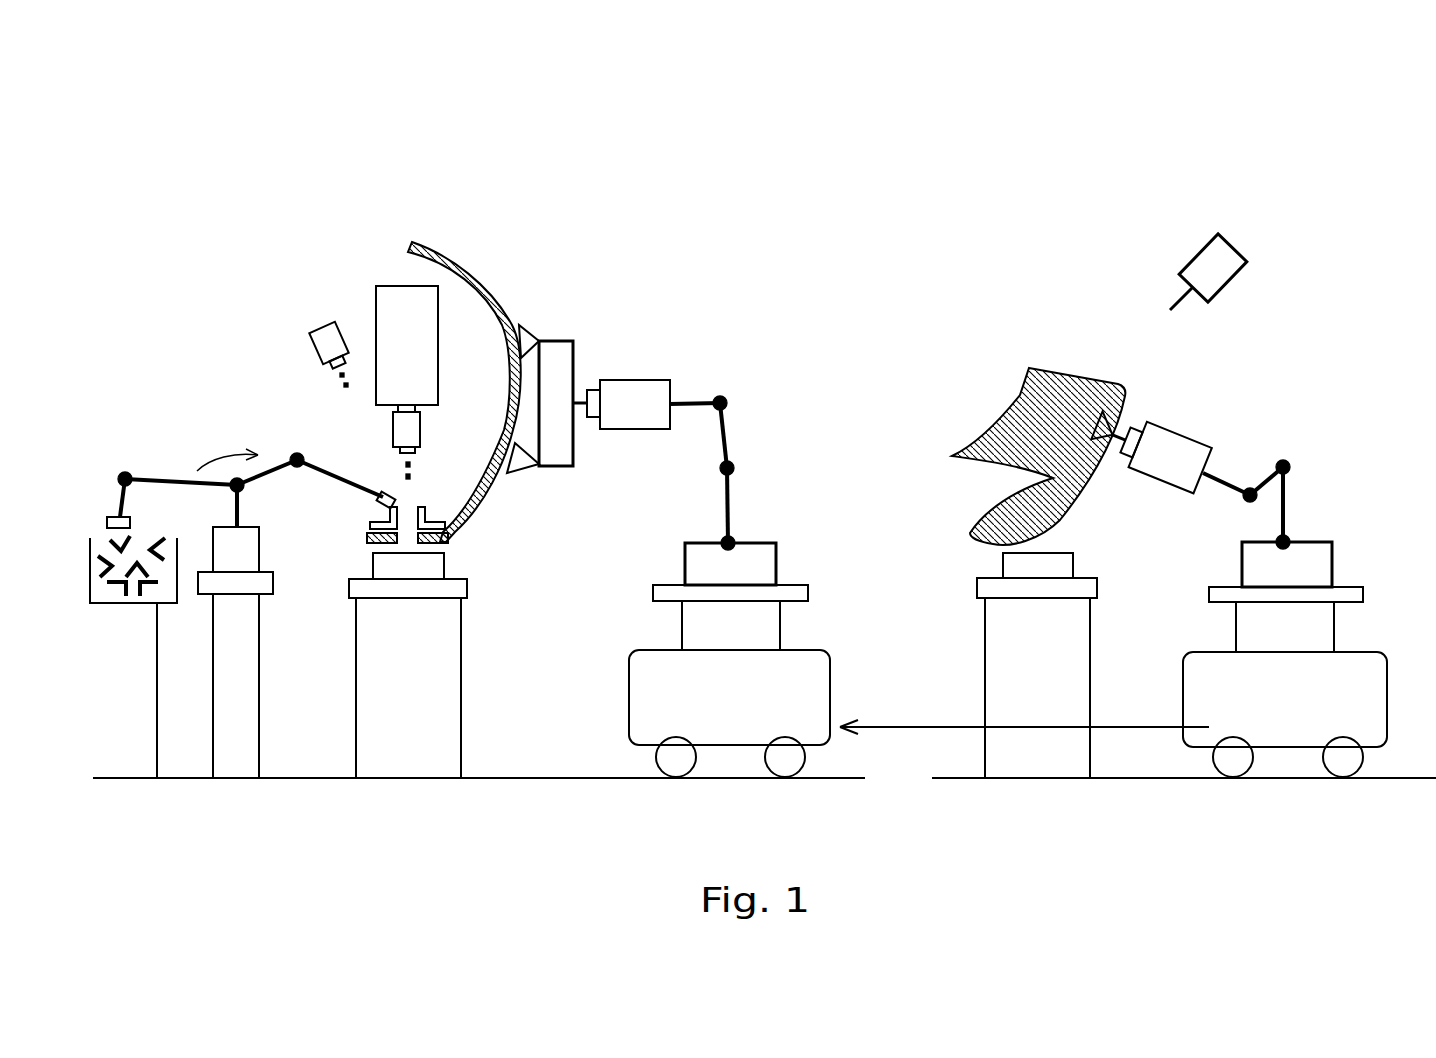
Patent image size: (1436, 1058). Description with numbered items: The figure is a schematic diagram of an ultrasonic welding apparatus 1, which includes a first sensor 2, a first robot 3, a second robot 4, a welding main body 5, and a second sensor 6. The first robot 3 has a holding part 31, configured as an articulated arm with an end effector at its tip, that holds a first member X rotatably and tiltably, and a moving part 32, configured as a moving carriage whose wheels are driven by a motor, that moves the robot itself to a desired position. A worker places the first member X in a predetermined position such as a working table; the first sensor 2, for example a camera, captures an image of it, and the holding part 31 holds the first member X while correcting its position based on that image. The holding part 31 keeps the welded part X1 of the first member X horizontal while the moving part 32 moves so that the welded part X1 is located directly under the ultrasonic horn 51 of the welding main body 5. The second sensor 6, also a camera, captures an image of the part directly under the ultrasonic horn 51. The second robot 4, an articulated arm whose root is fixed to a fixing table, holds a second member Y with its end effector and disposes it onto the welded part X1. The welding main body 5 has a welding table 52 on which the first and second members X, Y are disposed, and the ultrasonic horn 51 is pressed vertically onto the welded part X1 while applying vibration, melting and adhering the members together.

The ultrasonic welding apparatus 1 is at (1177, 142).
The first sensor 2 is at (1218, 235).
The first robot 3 is at (830, 617).
The holding part 31 is at (641, 378).
The moving part 32 is at (832, 700).
The second robot 4 is at (260, 545).
The welding main body 5 is at (461, 690).
The ultrasonic horn 51 is at (415, 430).
The welding table 52 is at (365, 688).
The second sensor 6 is at (309, 343).
The first member X is at (507, 283).
The welded part X1 is at (410, 537).
The second member Y is at (97, 532).